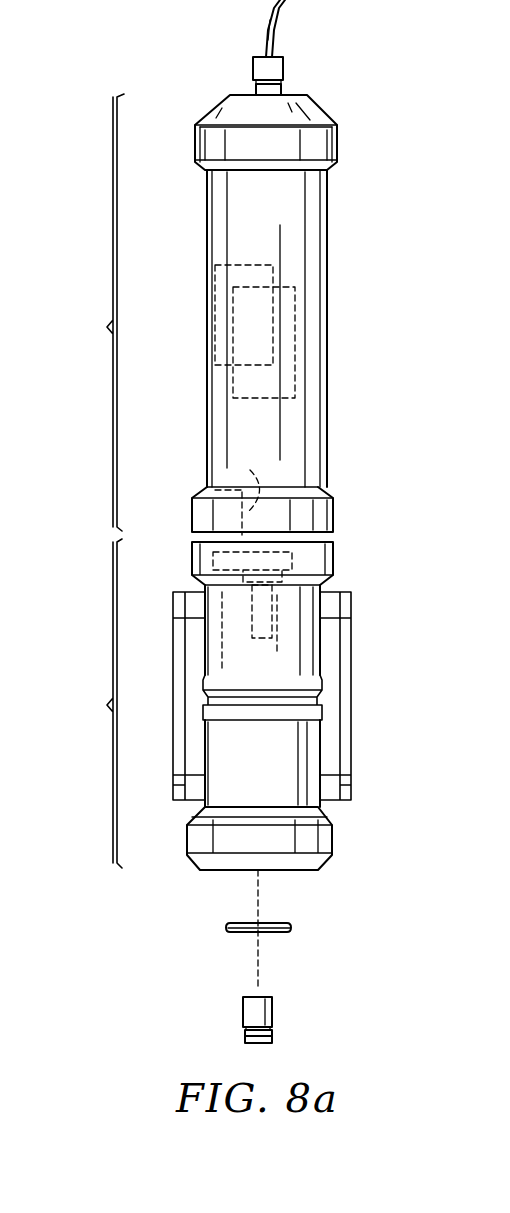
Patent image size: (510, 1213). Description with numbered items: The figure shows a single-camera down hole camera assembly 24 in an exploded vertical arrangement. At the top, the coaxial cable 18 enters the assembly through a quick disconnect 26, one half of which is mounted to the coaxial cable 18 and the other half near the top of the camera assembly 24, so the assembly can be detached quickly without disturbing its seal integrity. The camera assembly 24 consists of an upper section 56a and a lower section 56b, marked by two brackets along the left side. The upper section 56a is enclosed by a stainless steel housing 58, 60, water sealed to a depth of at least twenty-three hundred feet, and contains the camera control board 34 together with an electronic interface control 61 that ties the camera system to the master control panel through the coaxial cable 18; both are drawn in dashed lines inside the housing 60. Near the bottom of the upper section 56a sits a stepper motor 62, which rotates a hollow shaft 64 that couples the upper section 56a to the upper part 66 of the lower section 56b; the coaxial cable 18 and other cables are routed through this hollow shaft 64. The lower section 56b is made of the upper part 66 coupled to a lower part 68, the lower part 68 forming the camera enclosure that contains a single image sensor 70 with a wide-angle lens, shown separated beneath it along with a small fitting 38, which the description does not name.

The coaxial cable 18 is at (265, 30).
The quick disconnect 26 is at (253, 70).
The housing 58 is at (325, 108).
The housing 60 is at (327, 395).
The electronic interface control 61 is at (250, 262).
The camera control board 34 is at (300, 315).
The stepper motor 62 is at (244, 488).
The hollow shaft 64 is at (252, 623).
The upper part 66 is at (290, 638).
The lower part 68 is at (290, 752).
The image sensor 70 is at (292, 928).
The nut 38 is at (243, 1013).
The camera assembly 24 is at (86, 542).
The upper section 56a is at (90, 312).
The lower section 56b is at (87, 703).